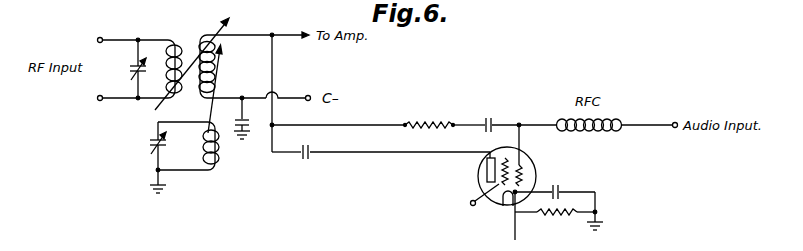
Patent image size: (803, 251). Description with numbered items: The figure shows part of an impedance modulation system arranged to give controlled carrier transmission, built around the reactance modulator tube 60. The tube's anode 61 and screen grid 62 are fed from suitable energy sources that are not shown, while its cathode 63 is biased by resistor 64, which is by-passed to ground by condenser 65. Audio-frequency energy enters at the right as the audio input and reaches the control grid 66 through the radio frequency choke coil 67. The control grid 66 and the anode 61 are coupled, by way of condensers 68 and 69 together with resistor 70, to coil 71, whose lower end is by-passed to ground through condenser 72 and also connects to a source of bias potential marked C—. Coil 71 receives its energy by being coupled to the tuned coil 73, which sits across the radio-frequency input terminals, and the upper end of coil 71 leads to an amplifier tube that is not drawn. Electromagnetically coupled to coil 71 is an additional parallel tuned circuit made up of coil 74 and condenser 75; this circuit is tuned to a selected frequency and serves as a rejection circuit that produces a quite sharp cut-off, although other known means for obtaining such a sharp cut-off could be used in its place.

The reactance modulator tube 60 is at (480, 181).
The anode 61 is at (482, 168).
The screen grid 62 is at (500, 155).
The cathode 63 is at (521, 191).
The resistor 64 is at (559, 215).
The condenser 65 is at (560, 189).
The control grid 66 is at (524, 168).
The radio frequency choke coil 67 is at (601, 120).
The condenser 68 is at (309, 159).
The condenser 69 is at (491, 116).
The resistor 70 is at (428, 121).
The coil 71 is at (214, 68).
The condenser 72 is at (251, 117).
The tuned coil 73 is at (171, 40).
The coil 74 is at (217, 150).
The condenser 75 is at (149, 145).